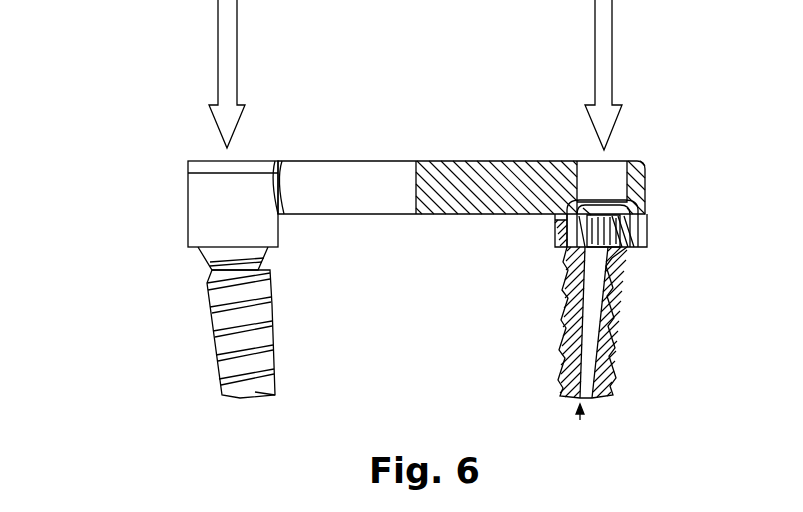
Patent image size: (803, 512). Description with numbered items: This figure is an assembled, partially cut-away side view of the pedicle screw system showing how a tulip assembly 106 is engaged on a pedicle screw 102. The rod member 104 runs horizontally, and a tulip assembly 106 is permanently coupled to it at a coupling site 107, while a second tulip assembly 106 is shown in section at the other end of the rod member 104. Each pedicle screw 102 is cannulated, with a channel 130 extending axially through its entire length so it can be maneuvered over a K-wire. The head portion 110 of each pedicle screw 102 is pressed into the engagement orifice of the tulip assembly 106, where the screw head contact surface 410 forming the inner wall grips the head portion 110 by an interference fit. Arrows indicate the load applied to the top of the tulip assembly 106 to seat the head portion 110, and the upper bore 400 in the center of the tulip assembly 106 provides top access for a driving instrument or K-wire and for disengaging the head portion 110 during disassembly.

The pedicle screw 102 is at (177, 337).
The rod member 104 is at (387, 178).
The tulip assembly 106 is at (196, 178).
The coupling site 107 is at (284, 160).
The head portion 110 is at (273, 267).
The channel 130 is at (583, 432).
The upper bore 400 is at (612, 150).
The screw head contact surface 410 is at (570, 245).